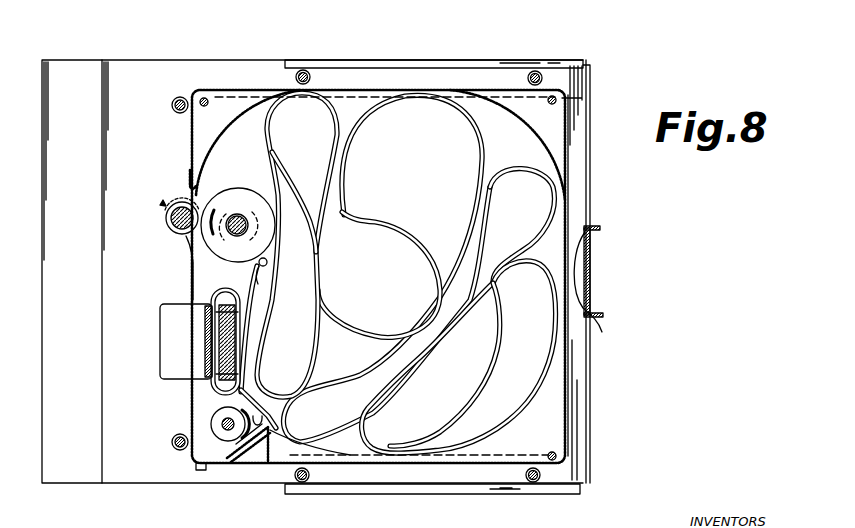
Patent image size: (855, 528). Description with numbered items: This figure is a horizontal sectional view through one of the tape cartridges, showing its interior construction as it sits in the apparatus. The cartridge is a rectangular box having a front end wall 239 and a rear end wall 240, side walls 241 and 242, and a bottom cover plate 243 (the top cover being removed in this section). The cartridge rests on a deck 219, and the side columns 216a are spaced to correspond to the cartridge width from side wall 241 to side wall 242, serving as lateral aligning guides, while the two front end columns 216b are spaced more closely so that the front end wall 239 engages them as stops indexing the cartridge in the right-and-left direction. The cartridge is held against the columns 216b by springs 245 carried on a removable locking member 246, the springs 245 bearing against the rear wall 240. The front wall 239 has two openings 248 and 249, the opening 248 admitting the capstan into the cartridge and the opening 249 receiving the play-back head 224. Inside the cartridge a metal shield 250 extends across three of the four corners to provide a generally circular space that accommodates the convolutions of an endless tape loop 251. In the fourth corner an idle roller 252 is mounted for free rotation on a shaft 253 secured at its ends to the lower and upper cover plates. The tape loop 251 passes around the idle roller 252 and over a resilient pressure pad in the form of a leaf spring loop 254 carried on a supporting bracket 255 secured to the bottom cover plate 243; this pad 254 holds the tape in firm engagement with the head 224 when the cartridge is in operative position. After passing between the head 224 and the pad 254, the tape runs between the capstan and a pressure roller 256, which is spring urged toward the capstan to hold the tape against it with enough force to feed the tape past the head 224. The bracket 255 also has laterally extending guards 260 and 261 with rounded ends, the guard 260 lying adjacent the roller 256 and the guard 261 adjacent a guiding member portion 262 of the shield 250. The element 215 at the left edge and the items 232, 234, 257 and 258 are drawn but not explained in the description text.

The base plate 215 is at (69, 478).
The deck 219 is at (140, 478).
The head 224 is at (158, 358).
The pulley 232 is at (172, 232).
The pulley bracket 234 is at (180, 200).
The front end wall 239 is at (189, 144).
The rear end wall 240 is at (572, 152).
The side wall 241 is at (380, 72).
The side wall 242 is at (497, 486).
The bottom cover plate 243 is at (532, 406).
The springs 245 is at (590, 226).
The removable locking member 246 is at (600, 312).
The opening 248 is at (190, 244).
The opening 249 is at (207, 308).
The metal shield 250 is at (226, 132).
The endless tape loop 251 is at (376, 221).
The idle roller 252 is at (247, 440).
The shaft 253 is at (222, 418).
The leaf spring loop 254 is at (220, 298).
The supporting bracket 255 is at (255, 337).
The pressure roller 256 is at (228, 200).
The hub 257 is at (245, 218).
The belt loop 258 is at (272, 238).
The guard 260 is at (274, 286).
The guard 261 is at (250, 382).
The guiding member portion 262 is at (262, 450).
The side columns 216a is at (305, 70).
The front end columns 216b is at (183, 96).